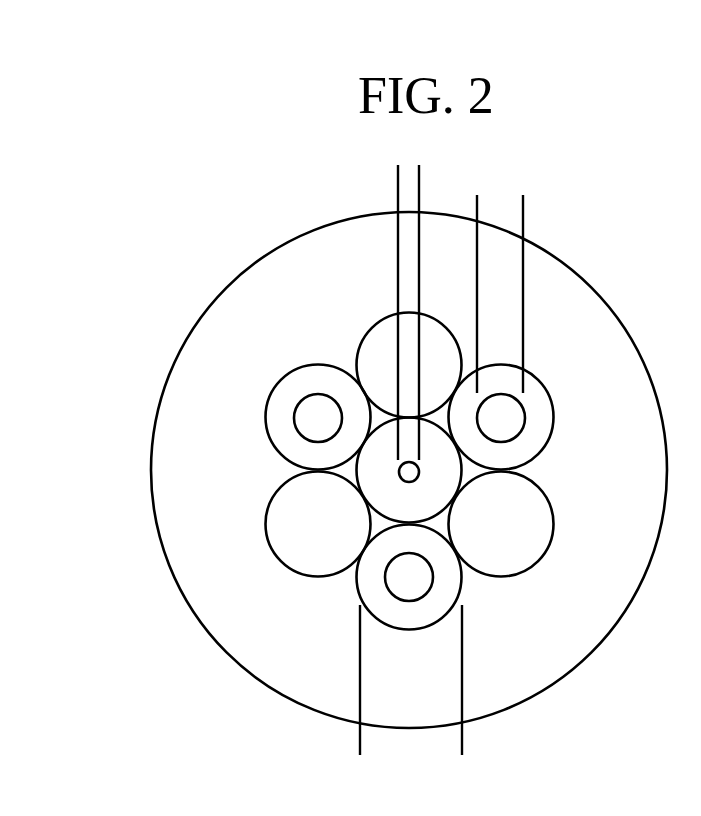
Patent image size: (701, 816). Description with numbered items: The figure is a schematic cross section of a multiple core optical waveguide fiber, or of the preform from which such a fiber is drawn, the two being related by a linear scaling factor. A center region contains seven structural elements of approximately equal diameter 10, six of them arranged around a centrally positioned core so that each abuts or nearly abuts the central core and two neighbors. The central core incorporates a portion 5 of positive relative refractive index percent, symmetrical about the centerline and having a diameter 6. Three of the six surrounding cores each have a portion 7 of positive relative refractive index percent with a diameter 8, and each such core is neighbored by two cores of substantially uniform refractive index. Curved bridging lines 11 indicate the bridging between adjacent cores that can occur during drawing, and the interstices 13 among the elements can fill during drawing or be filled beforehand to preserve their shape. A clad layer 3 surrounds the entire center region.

The clad layer 3 is at (577, 328).
The portion of the centrally positioned core 5 is at (404, 475).
The diameter of portion 5 6 is at (350, 174).
The portion of surrounding structural element 7 is at (307, 422).
The diameter of portion 7 8 is at (430, 202).
The diameter of structural elements 10 is at (450, 748).
The curved bridging lines 11 is at (358, 373).
The interstices 13 is at (378, 523).